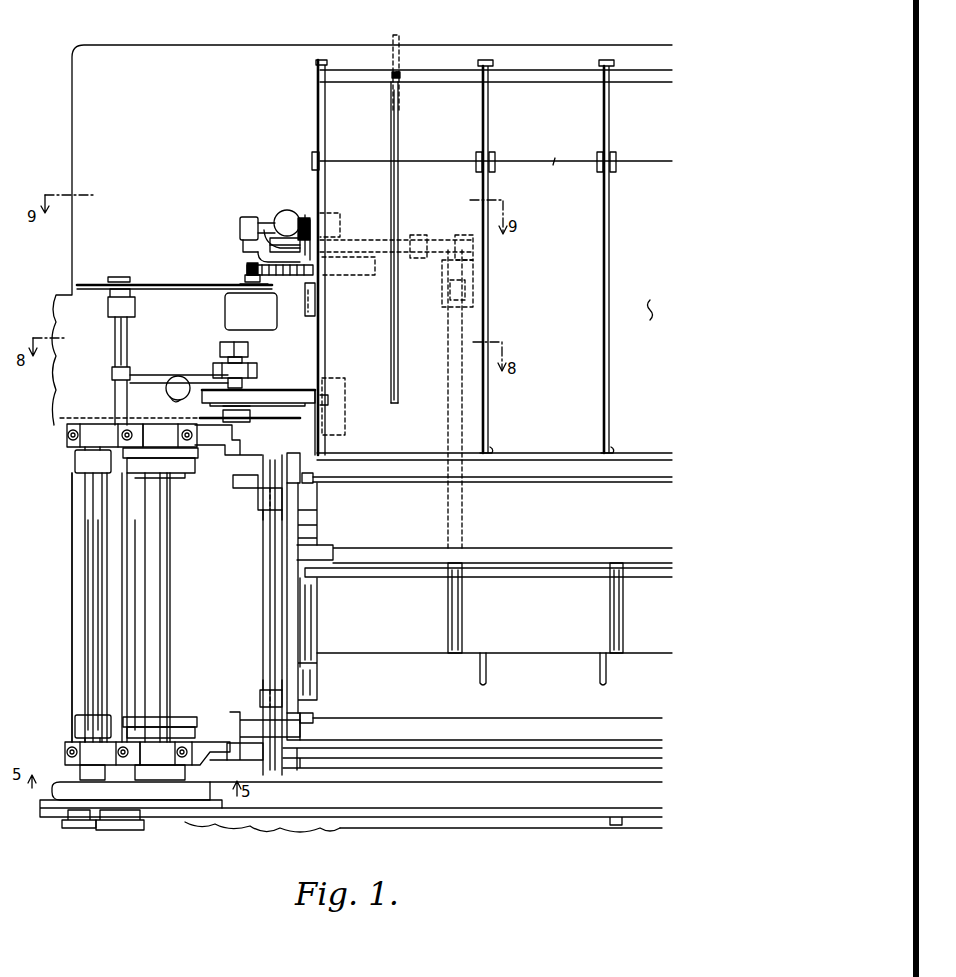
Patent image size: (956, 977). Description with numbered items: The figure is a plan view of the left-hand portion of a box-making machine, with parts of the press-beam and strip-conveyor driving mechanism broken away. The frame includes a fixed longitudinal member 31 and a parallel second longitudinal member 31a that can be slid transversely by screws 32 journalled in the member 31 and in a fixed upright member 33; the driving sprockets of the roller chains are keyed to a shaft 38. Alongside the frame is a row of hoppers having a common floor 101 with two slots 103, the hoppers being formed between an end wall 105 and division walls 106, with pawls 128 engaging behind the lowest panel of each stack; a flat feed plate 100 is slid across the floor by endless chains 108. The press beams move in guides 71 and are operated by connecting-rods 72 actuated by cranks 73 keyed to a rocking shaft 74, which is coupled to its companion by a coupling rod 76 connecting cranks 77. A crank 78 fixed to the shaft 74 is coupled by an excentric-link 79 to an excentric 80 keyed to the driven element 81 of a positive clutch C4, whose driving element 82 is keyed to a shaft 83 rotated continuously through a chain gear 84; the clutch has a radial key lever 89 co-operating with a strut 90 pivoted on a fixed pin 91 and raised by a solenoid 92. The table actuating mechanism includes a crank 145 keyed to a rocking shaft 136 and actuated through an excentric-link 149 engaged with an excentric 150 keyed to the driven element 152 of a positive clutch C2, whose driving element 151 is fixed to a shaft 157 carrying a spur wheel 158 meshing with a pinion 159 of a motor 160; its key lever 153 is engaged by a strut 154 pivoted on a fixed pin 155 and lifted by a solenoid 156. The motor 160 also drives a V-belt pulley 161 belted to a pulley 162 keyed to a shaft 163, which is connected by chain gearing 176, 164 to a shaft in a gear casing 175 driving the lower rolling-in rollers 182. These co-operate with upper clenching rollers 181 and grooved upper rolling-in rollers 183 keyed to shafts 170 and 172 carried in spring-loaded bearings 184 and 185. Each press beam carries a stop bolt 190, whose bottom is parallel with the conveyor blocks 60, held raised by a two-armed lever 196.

The end wall 105 is at (316, 128).
The division wall 106 is at (489, 130).
The pawl 128 is at (322, 160).
The feed plate 100 is at (560, 170).
The common floor 101 is at (649, 302).
The endless chain 108 is at (400, 193).
The slot 103 is at (398, 382).
The rocking shaft 136 is at (462, 632).
The screw 32 is at (624, 636).
The driven element of clutch C2 152 is at (338, 218).
The excentric-link 149 is at (396, 250).
The crank 145 is at (442, 275).
The crank 78 is at (346, 418).
The fixed pin 155 is at (244, 217).
The solenoid 156 is at (283, 211).
The positive clutch C2 is at (302, 215).
The strut 154 is at (255, 225).
The excentric 150 is at (272, 226).
The driving element of clutch C2 151 is at (309, 224).
The radial key lever 153 is at (312, 228).
The spur wheel 158 is at (290, 276).
The pinion 159 is at (247, 265).
The V-belt pulley 161 is at (246, 280).
The shaft 157 is at (316, 305).
The motor 160 is at (251, 311).
The pulley 162 is at (93, 283).
The shaft 163 is at (130, 316).
The fixed pin 91 is at (117, 366).
The strut 90 is at (142, 375).
The solenoid 92 is at (166, 391).
The driving element of clutch C4 82 is at (226, 357).
The driven element of clutch C4 81 is at (244, 374).
The radial key lever 89 is at (218, 370).
The positive clutch C4 is at (252, 372).
The excentric 80 is at (270, 391).
The excentric-link 79 is at (318, 392).
The shaft 83 is at (242, 406).
The chain gear 84 is at (252, 419).
The longitudinal member 31 is at (208, 430).
The spring-loaded bearing 184 is at (104, 594).
The spring-loaded bearing 185 is at (168, 594).
The upper clenching roller 181 is at (93, 613).
The lower rolling-in roller 182 is at (171, 614).
The upper rolling-in roller 183 is at (198, 727).
The shaft 170 is at (72, 545).
The shaft 172 is at (160, 553).
The conveyor block 60 is at (240, 488).
The guide 71 is at (245, 489).
The connecting-rod 72 is at (260, 505).
The crank 73 is at (264, 520).
The bolt 190 is at (300, 463).
The two-armed lever 196 is at (313, 480).
The rocking shaft 74 is at (318, 615).
The crank 77 is at (335, 555).
The coupling rod 76 is at (362, 568).
The fixed upright member 33 is at (381, 805).
The gear casing 175 is at (131, 791).
The longitudinal member 31a is at (215, 760).
The shaft 38 is at (285, 815).
The chain gearing 164 is at (72, 822).
The chain gearing 176 is at (135, 824).